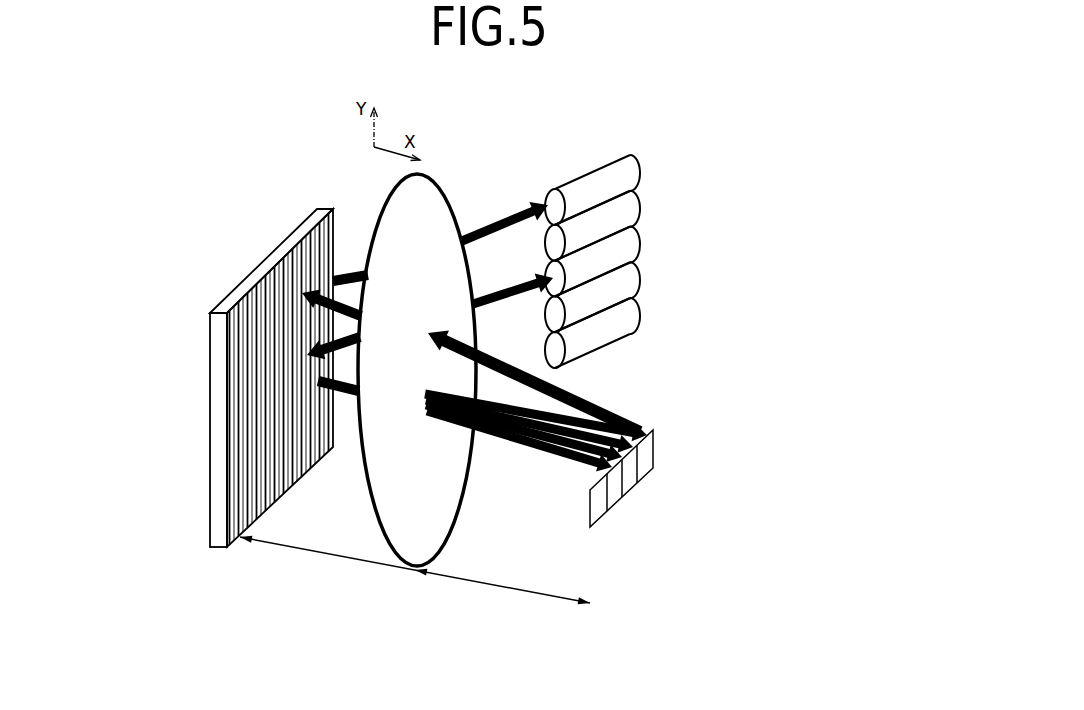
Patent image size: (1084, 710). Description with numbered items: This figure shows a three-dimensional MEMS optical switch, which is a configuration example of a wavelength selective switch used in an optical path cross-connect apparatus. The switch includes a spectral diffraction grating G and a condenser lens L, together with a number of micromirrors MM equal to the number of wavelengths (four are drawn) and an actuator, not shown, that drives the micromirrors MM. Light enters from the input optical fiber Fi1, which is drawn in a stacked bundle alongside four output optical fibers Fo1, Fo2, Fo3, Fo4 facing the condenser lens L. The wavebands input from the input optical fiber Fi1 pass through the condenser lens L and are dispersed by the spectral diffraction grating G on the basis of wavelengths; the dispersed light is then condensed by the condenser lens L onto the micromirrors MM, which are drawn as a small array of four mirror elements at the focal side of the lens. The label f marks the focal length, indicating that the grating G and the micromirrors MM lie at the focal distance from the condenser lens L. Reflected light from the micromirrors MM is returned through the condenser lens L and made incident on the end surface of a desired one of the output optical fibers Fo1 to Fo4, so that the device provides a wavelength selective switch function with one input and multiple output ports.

The spectral diffraction grating G is at (218, 353).
The condenser lens L is at (420, 198).
The output optical fiber Fo1 is at (628, 180).
The output optical fiber Fo2 is at (628, 215).
The input optical fiber Fi1 is at (628, 250).
The output optical fiber Fo3 is at (628, 287).
The output optical fiber Fo4 is at (628, 323).
The micromirrors MM is at (646, 457).
The focal length f is at (415, 580).